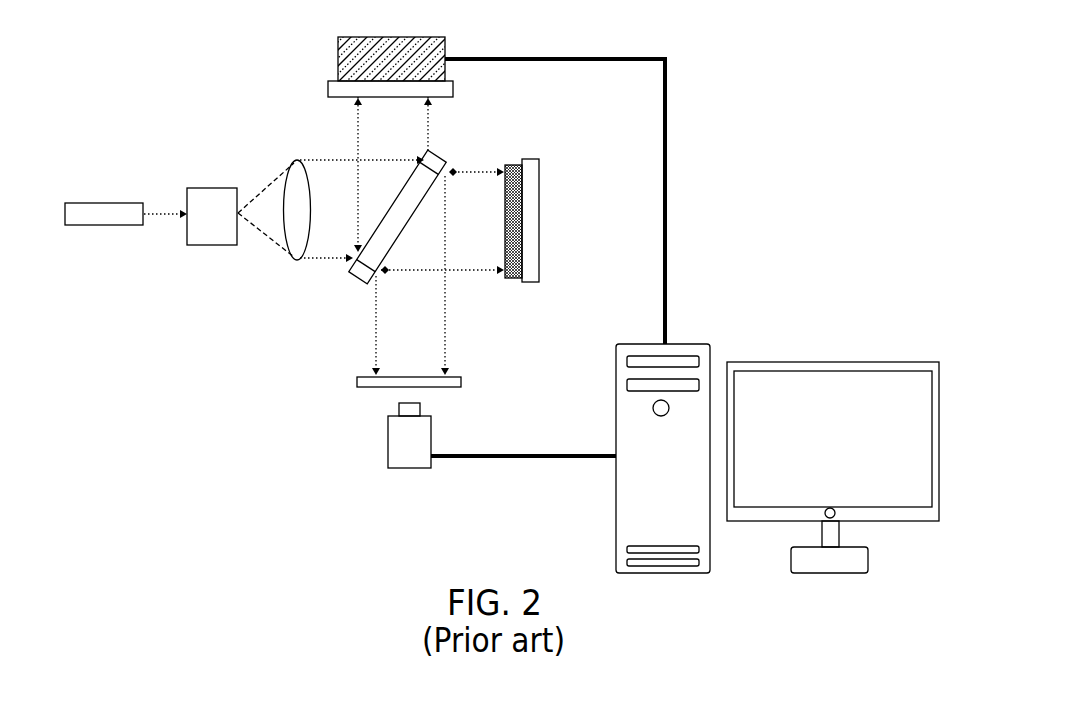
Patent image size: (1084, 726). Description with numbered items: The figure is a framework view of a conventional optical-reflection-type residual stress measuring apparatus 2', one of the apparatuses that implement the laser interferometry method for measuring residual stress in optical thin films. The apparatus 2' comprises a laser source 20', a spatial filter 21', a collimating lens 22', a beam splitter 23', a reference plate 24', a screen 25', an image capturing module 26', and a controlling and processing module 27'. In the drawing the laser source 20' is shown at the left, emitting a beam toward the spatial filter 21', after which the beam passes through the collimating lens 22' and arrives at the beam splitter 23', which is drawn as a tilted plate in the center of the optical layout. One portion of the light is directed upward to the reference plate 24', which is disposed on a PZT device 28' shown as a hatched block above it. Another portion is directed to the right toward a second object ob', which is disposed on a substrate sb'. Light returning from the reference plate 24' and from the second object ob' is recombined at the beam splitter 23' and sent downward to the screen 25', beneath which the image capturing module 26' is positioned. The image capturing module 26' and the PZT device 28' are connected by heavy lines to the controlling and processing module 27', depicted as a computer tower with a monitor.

The optical-reflection-type residual stress measuring apparatus 2' is at (137, 68).
The laser source 20' is at (104, 239).
The spatial filter 21' is at (214, 240).
The collimating lens 22' is at (283, 191).
The beam splitter 23' is at (397, 206).
The reference plate 24' is at (406, 112).
The screen 25' is at (384, 373).
The image capturing module 26' is at (384, 435).
The controlling and processing module 27' is at (753, 458).
The PZT device 28' is at (389, 54).
The second object ob' is at (489, 221).
The substrate sb' is at (555, 212).